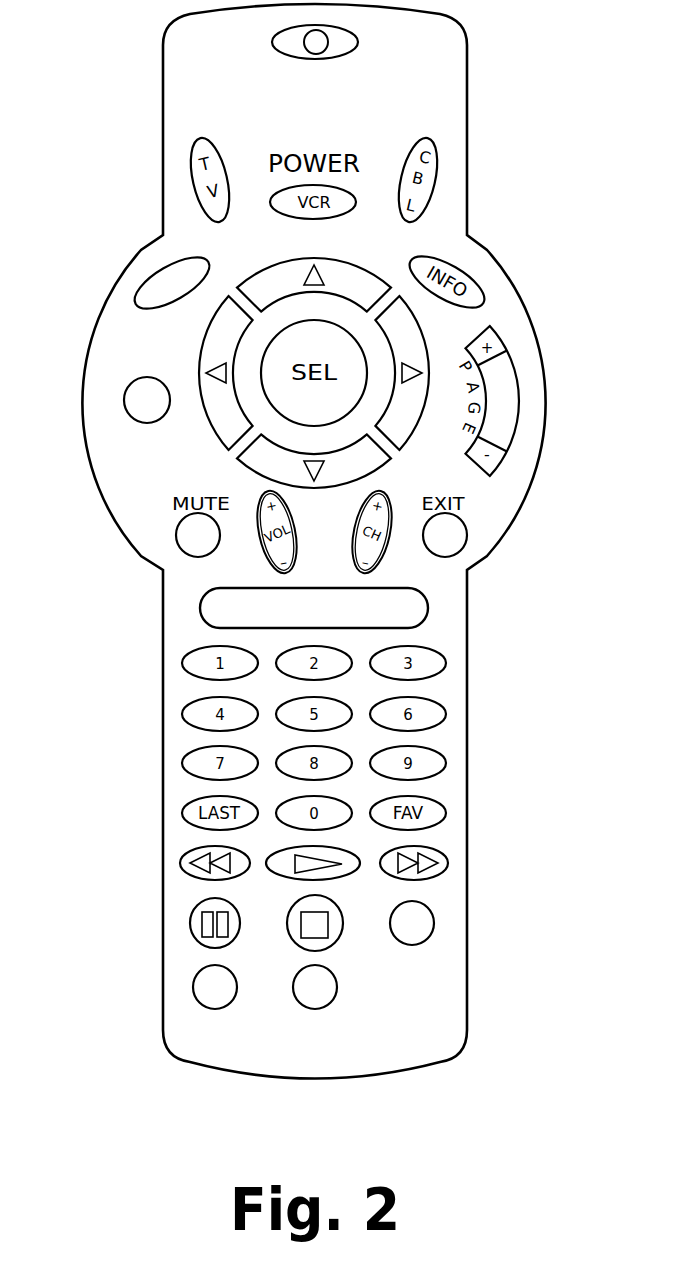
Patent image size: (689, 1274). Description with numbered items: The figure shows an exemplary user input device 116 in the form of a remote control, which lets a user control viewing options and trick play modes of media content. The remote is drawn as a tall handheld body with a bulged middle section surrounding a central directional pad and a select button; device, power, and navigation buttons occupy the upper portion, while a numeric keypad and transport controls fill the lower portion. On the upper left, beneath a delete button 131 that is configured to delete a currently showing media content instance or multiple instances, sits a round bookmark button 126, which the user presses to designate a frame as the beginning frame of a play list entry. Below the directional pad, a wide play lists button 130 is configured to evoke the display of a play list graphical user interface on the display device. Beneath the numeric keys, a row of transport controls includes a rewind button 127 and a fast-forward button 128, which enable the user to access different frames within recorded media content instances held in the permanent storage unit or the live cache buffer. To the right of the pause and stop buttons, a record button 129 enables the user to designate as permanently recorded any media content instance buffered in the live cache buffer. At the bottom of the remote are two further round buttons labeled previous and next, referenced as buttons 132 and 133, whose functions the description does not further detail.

The user input device 116 is at (505, 73).
The bookmark button 126 is at (124, 400).
The rewind button 127 is at (180, 863).
The fast-forward button 128 is at (448, 863).
The record button 129 is at (434, 921).
The play lists button 130 is at (428, 608).
The delete button 131 is at (135, 300).
The previous button 132 is at (193, 987).
The next button 133 is at (337, 987).